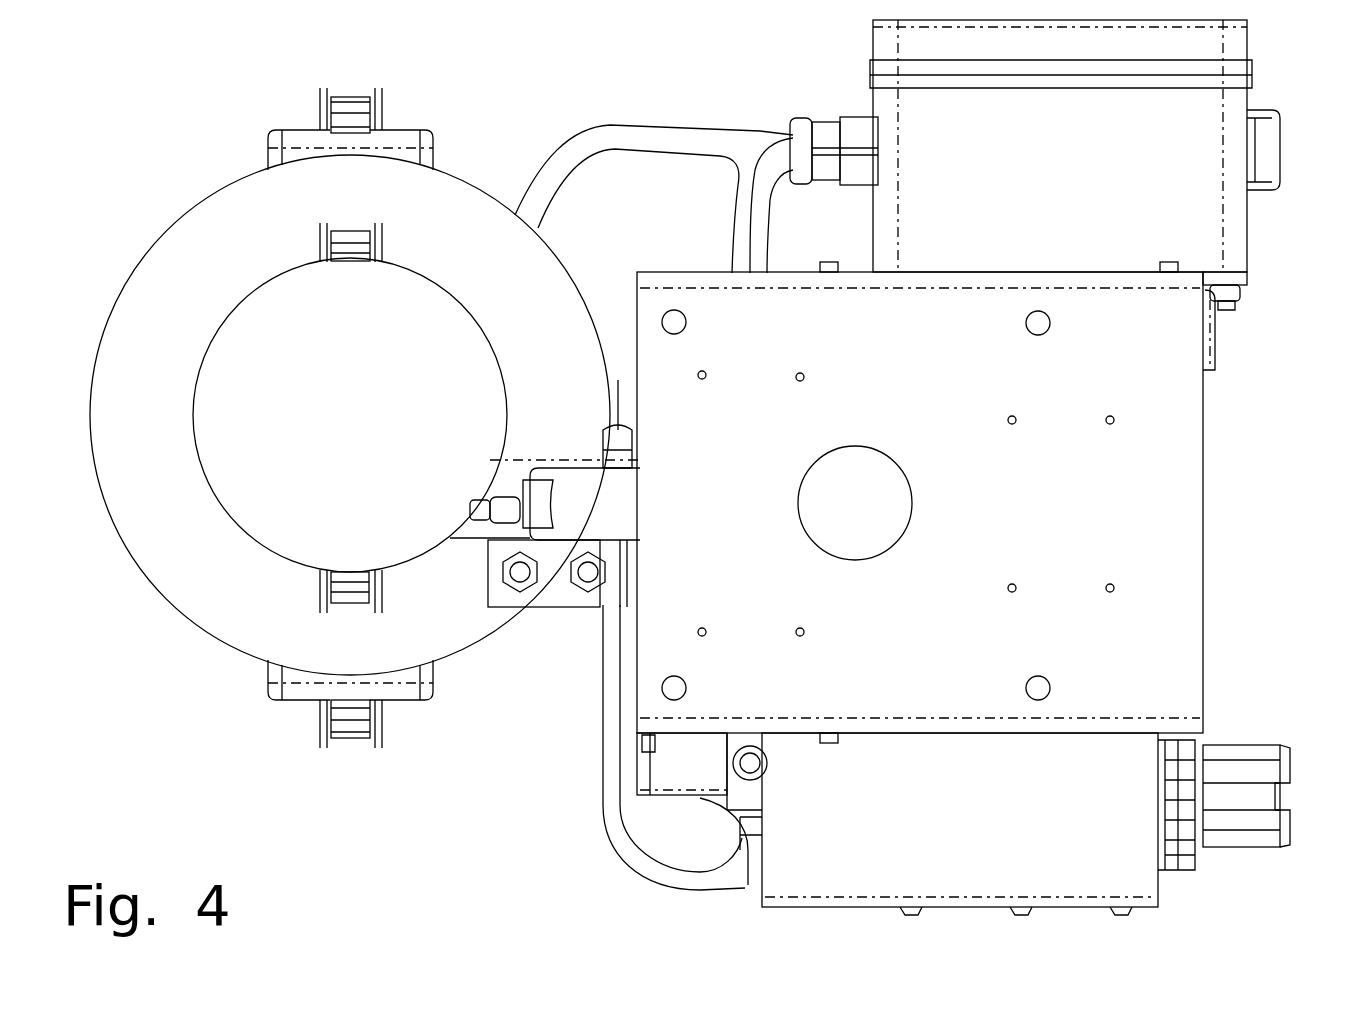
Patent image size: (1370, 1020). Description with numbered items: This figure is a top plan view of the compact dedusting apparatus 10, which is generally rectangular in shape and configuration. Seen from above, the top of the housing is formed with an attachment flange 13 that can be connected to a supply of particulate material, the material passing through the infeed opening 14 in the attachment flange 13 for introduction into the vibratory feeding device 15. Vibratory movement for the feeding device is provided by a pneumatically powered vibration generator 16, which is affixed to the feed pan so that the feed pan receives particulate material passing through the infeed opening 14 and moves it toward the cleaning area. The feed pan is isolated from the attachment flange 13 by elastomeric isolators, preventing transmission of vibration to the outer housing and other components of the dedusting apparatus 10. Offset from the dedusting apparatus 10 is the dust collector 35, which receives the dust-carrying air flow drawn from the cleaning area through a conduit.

The dedusting apparatus 10 is at (535, 773).
The attachment flange 13 is at (1155, 432).
The infeed opening 14 is at (915, 507).
The vibratory feeding device 15 is at (1222, 518).
The pneumatically powered vibration generator 16 is at (587, 493).
The dust collector 35 is at (243, 602).